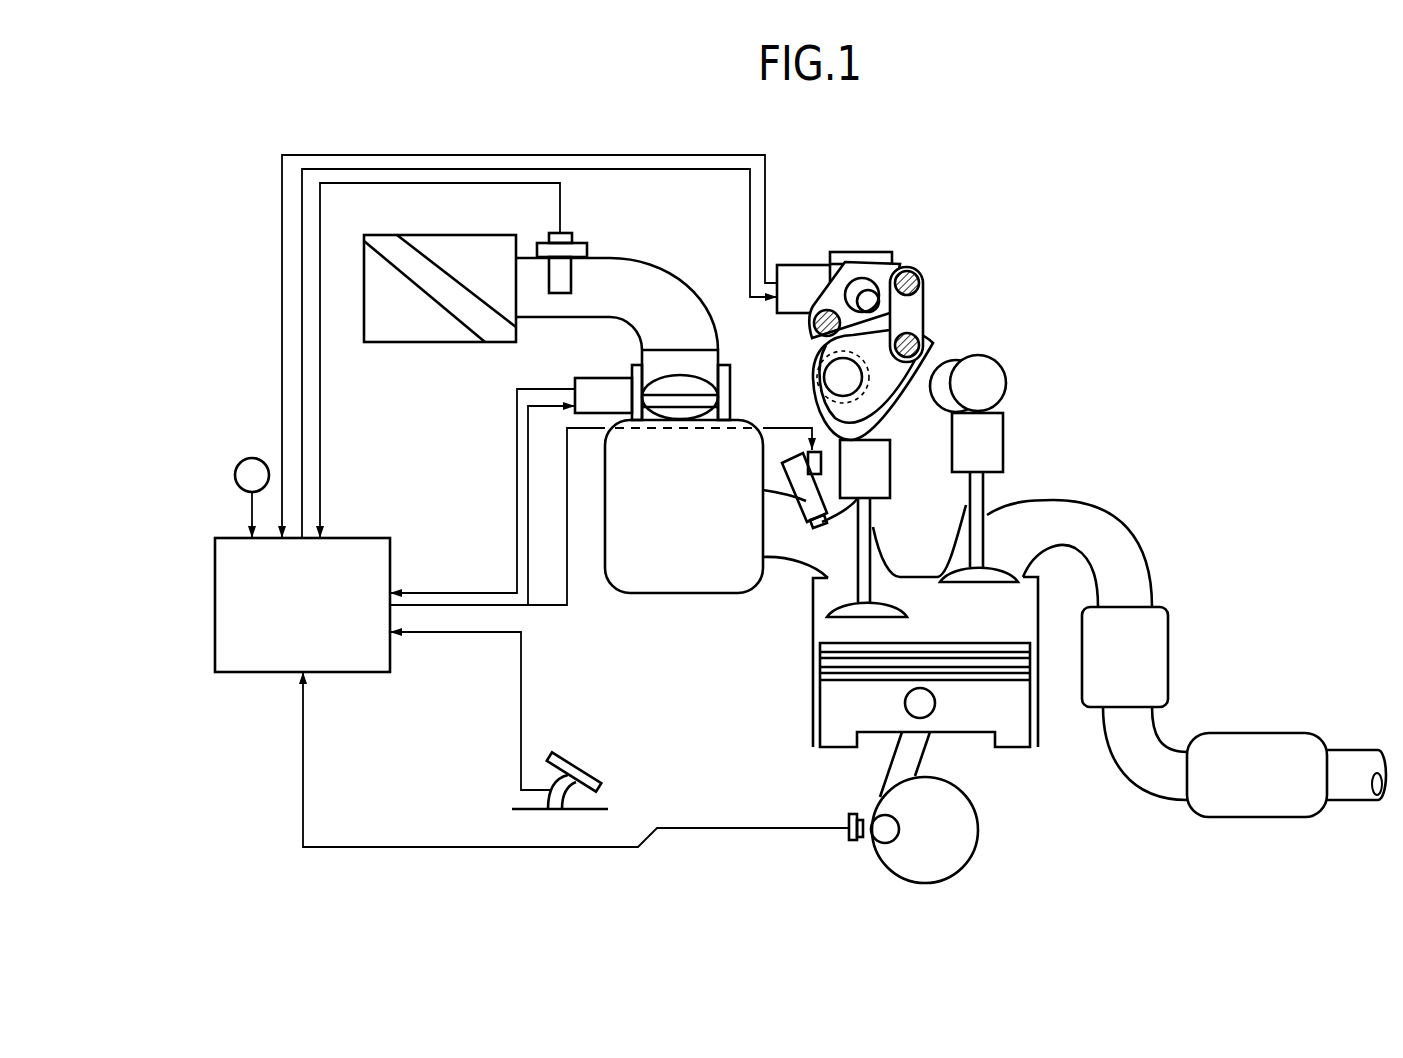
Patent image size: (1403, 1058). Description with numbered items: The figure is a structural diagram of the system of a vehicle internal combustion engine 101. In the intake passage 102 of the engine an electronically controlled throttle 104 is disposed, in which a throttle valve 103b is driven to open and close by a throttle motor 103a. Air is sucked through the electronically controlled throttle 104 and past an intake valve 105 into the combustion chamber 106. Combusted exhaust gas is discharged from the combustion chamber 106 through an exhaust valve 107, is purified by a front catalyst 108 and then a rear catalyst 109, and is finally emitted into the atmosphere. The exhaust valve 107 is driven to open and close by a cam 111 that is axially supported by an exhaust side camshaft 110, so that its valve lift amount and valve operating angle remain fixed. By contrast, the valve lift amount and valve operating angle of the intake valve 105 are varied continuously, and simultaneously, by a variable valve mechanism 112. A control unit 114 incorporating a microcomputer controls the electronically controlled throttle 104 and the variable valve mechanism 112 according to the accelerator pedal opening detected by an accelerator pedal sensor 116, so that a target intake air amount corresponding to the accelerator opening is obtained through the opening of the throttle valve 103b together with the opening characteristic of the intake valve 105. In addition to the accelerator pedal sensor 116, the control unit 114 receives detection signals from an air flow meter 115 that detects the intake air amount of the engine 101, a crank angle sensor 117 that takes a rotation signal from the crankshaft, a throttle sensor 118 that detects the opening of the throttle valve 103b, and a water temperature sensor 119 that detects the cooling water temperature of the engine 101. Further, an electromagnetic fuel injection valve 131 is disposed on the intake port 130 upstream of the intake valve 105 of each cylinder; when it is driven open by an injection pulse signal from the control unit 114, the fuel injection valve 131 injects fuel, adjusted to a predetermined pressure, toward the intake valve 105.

The internal combustion engine 101 is at (902, 694).
The intake passage 102 is at (653, 283).
The throttle motor 103a is at (597, 383).
The throttle valve 103b is at (687, 377).
The electronically controlled throttle 104 is at (603, 320).
The intake valve 105 is at (863, 573).
The combustion chamber 106 is at (1007, 627).
The exhaust valve 107 is at (987, 490).
The front catalyst 108 is at (1160, 632).
The rear catalyst 109 is at (1297, 750).
The exhaust side camshaft 110 is at (987, 377).
The cam 111 is at (952, 358).
The variable valve mechanism 112 is at (920, 238).
The control unit 114 is at (362, 672).
The air flow meter 115 is at (568, 232).
The accelerator pedal sensor APS 116 is at (533, 809).
The crank angle sensor 117 is at (852, 842).
The throttle sensor 118 is at (730, 390).
The water temperature sensor 119 is at (250, 457).
The intake port 130 is at (790, 560).
The electromagnetic fuel injection valve 131 is at (800, 506).